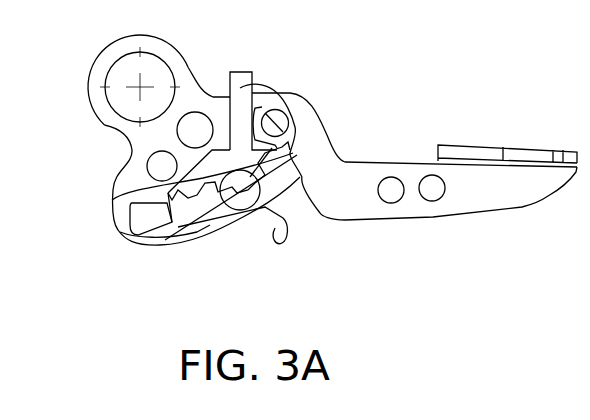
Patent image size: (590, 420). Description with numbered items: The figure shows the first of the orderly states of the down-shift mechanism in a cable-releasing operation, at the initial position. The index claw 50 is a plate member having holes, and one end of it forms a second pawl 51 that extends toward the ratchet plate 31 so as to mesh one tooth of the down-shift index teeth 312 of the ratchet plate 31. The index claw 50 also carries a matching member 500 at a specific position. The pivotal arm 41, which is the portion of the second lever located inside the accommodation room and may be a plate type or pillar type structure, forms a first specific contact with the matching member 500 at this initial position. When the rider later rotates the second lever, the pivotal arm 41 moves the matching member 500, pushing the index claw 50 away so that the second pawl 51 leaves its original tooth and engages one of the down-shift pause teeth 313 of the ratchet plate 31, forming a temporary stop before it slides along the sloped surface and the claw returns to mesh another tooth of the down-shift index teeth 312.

The ratchet plate 31 is at (112, 122).
The down-shift index teeth 312 is at (143, 225).
The down-shift pause teeth 313 is at (192, 225).
The pivotal arm 41 is at (317, 151).
The index claw 50 is at (284, 212).
The second pawl 51 is at (155, 228).
The matching member 500 is at (247, 73).